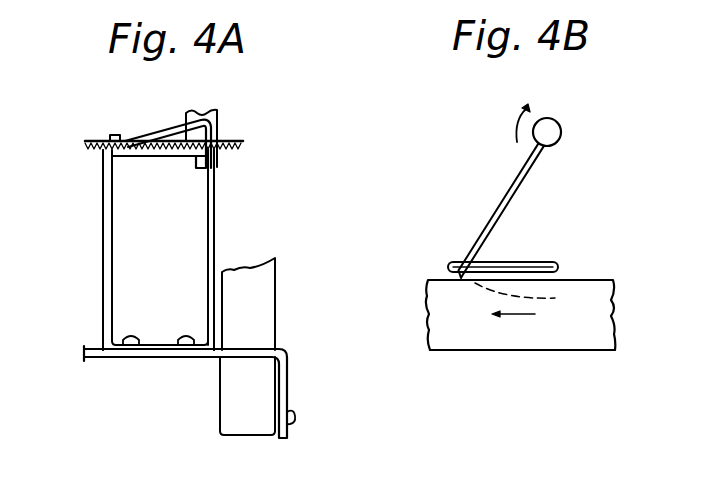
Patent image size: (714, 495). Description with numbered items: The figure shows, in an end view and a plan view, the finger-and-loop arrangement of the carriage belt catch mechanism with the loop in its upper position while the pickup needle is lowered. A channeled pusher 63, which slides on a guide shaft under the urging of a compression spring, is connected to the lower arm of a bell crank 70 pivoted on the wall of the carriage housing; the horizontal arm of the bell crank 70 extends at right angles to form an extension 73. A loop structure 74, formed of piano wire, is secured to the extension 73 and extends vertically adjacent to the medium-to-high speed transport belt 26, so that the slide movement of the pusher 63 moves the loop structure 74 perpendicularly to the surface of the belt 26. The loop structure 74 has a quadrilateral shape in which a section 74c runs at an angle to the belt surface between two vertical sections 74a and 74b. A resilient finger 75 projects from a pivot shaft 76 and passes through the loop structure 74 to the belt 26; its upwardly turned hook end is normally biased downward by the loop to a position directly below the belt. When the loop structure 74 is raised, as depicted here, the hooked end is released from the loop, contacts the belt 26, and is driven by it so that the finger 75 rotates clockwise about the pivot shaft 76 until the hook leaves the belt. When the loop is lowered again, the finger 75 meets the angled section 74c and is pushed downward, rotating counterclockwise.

In FIG. 4A, the medium-to-high speed transport belt 26 is at (243, 141).
In FIG. 4B, the medium-to-high speed transport belt 26 is at (560, 343).
In FIG. 4A, the pusher 63 is at (276, 286).
In FIG. 4A, the bell crank 70 is at (287, 373).
In FIG. 4A, the extension 73 is at (241, 350).
In FIG. 4A, the loop structure 74 is at (175, 253).
In FIG. 4B, the loop structure 74 is at (558, 263).
In FIG. 4A, the vertical section 74a is at (103, 259).
In FIG. 4A, the vertical section 74b is at (215, 204).
In FIG. 4A, the section 74c is at (166, 135).
In FIG. 4A, the resilient finger 75 is at (135, 157).
In FIG. 4B, the resilient finger 75 is at (518, 200).
In FIG. 4A, the pivot shaft 76 is at (220, 116).
In FIG. 4B, the pivot shaft 76 is at (561, 129).